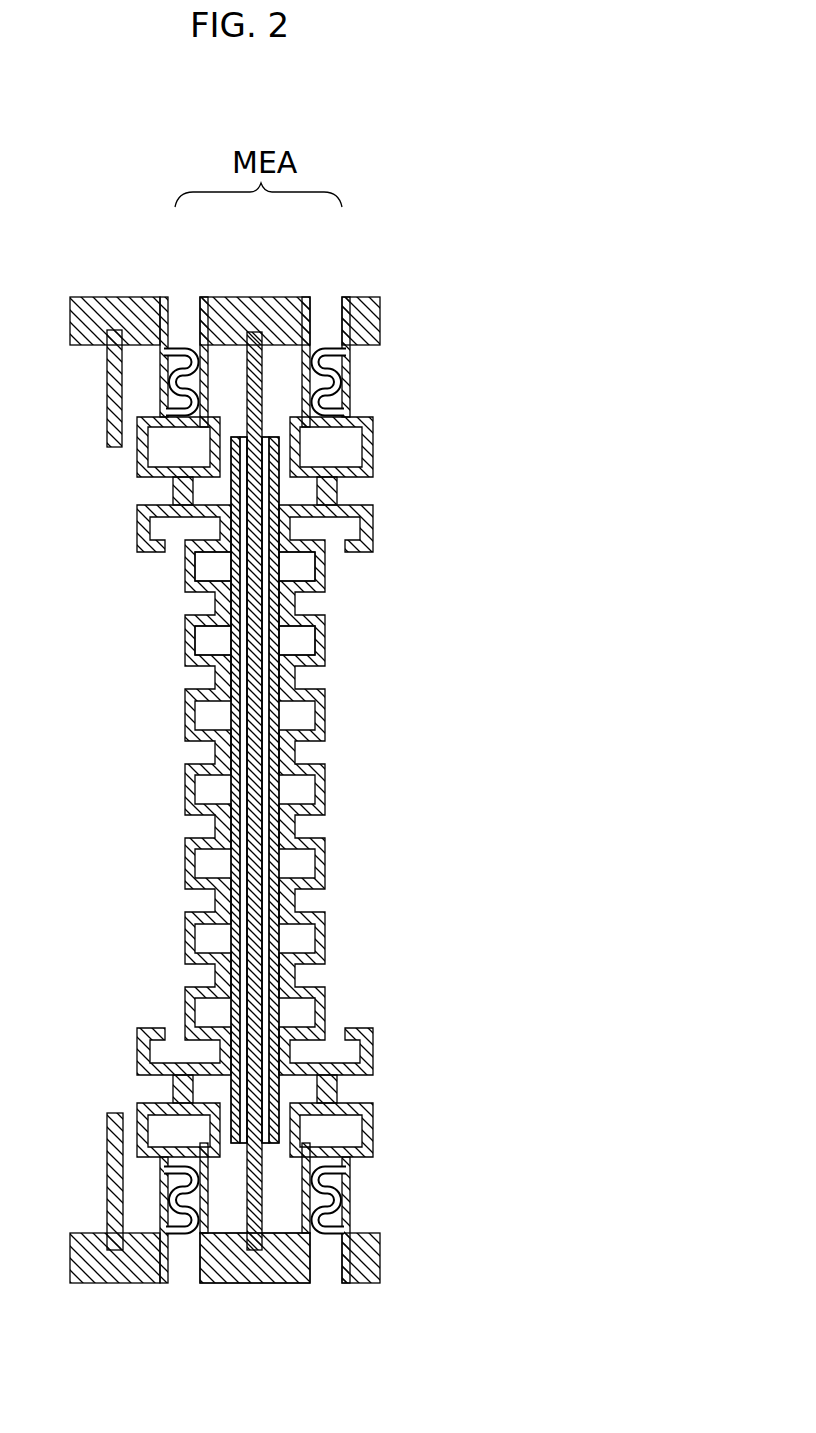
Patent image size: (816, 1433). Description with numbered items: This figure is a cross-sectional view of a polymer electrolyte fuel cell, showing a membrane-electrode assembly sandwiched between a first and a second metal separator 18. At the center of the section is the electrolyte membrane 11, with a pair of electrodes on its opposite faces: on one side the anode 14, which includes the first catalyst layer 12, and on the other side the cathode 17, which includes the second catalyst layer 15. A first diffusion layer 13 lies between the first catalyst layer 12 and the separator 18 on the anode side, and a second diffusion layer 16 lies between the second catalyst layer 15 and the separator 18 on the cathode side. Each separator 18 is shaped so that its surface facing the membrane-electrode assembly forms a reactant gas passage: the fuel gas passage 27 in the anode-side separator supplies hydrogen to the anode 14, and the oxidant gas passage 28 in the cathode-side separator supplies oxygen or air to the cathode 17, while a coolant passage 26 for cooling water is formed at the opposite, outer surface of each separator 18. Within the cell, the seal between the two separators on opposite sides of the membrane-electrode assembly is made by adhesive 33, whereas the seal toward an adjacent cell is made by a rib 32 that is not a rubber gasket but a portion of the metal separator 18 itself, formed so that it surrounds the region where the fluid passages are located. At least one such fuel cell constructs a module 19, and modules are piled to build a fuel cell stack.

The electrolyte membrane 11 is at (254, 332).
The first catalyst layer 12 is at (240, 437).
The first diffusion layer 13 is at (233, 437).
The anode 14 is at (212, 674).
The second catalyst layer 15 is at (268, 437).
The second diffusion layer 16 is at (278, 437).
The cathode 17 is at (301, 674).
The separator 18 is at (190, 721).
The module 19 is at (320, 1292).
The coolant passage 26 is at (205, 603).
The fuel gas passage 27 is at (213, 565).
The oxidant gas passage 28 is at (295, 567).
The rib 32 is at (343, 400).
The adhesive 33 is at (367, 322).